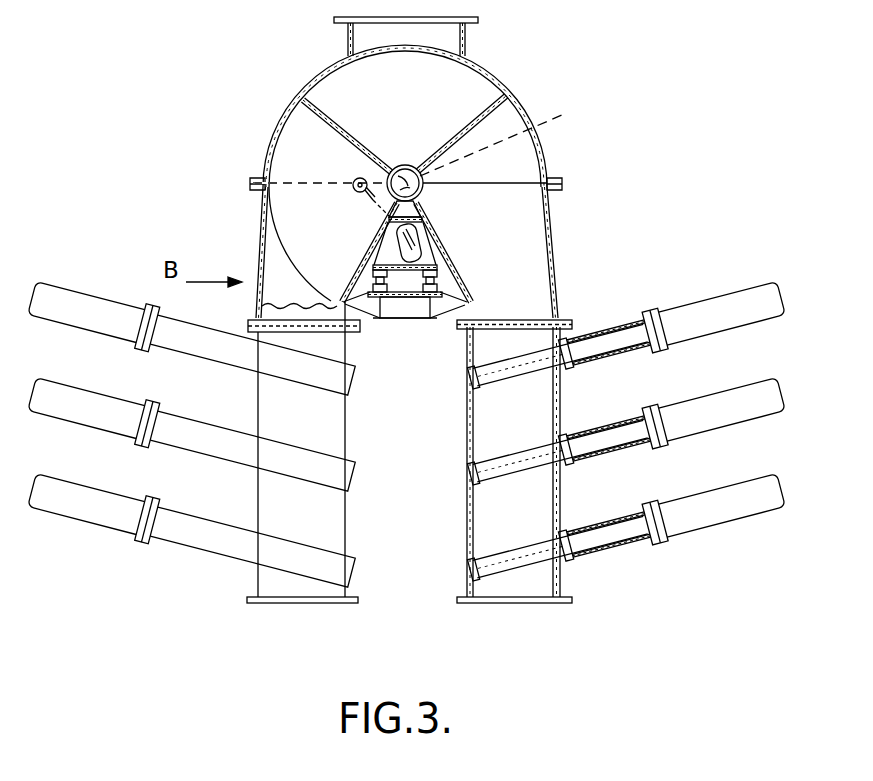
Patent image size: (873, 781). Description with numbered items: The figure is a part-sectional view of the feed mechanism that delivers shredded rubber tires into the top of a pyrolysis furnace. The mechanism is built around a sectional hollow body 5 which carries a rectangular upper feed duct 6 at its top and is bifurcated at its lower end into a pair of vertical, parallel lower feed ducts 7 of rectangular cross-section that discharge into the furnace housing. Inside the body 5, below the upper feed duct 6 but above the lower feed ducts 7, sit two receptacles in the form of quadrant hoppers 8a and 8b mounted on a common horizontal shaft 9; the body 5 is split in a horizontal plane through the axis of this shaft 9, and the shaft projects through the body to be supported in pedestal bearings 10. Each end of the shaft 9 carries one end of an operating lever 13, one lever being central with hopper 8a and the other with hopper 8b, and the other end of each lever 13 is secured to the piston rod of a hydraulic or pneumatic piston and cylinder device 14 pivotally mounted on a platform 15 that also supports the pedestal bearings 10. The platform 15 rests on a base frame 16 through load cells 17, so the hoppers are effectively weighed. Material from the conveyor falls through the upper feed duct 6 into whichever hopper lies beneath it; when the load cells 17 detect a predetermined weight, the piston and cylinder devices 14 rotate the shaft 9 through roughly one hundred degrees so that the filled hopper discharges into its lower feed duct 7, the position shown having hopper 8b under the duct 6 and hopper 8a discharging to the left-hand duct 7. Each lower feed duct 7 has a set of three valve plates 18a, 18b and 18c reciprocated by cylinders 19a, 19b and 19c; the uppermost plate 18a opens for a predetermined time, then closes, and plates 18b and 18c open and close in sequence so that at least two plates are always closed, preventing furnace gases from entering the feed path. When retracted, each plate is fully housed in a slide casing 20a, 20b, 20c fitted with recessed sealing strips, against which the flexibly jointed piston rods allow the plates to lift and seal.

The hollow body 5 is at (493, 70).
The upper feed duct 6 is at (465, 35).
The lower feed ducts 7 is at (322, 422).
The quadrant hopper 8a is at (300, 147).
The quadrant hopper 8b is at (472, 98).
The common shaft 9 is at (500, 137).
The pedestal bearings 10 is at (420, 242).
The operating lever 13 is at (388, 158).
The piston and cylinder device 14 is at (402, 237).
The platform 15 is at (433, 272).
The base frame 16 is at (447, 297).
The load cells 17 is at (373, 278).
The valve plate 18a is at (583, 337).
The valve plate 18b is at (583, 440).
The valve plate 18c is at (570, 532).
The hydraulic or pneumatic cylinder 19a is at (92, 317).
The hydraulic or pneumatic cylinder 19b is at (82, 413).
The hydraulic or pneumatic cylinder 19c is at (87, 510).
The slide casing 20a is at (197, 338).
The slide casing 20b is at (188, 438).
The slide casing 20c is at (202, 537).